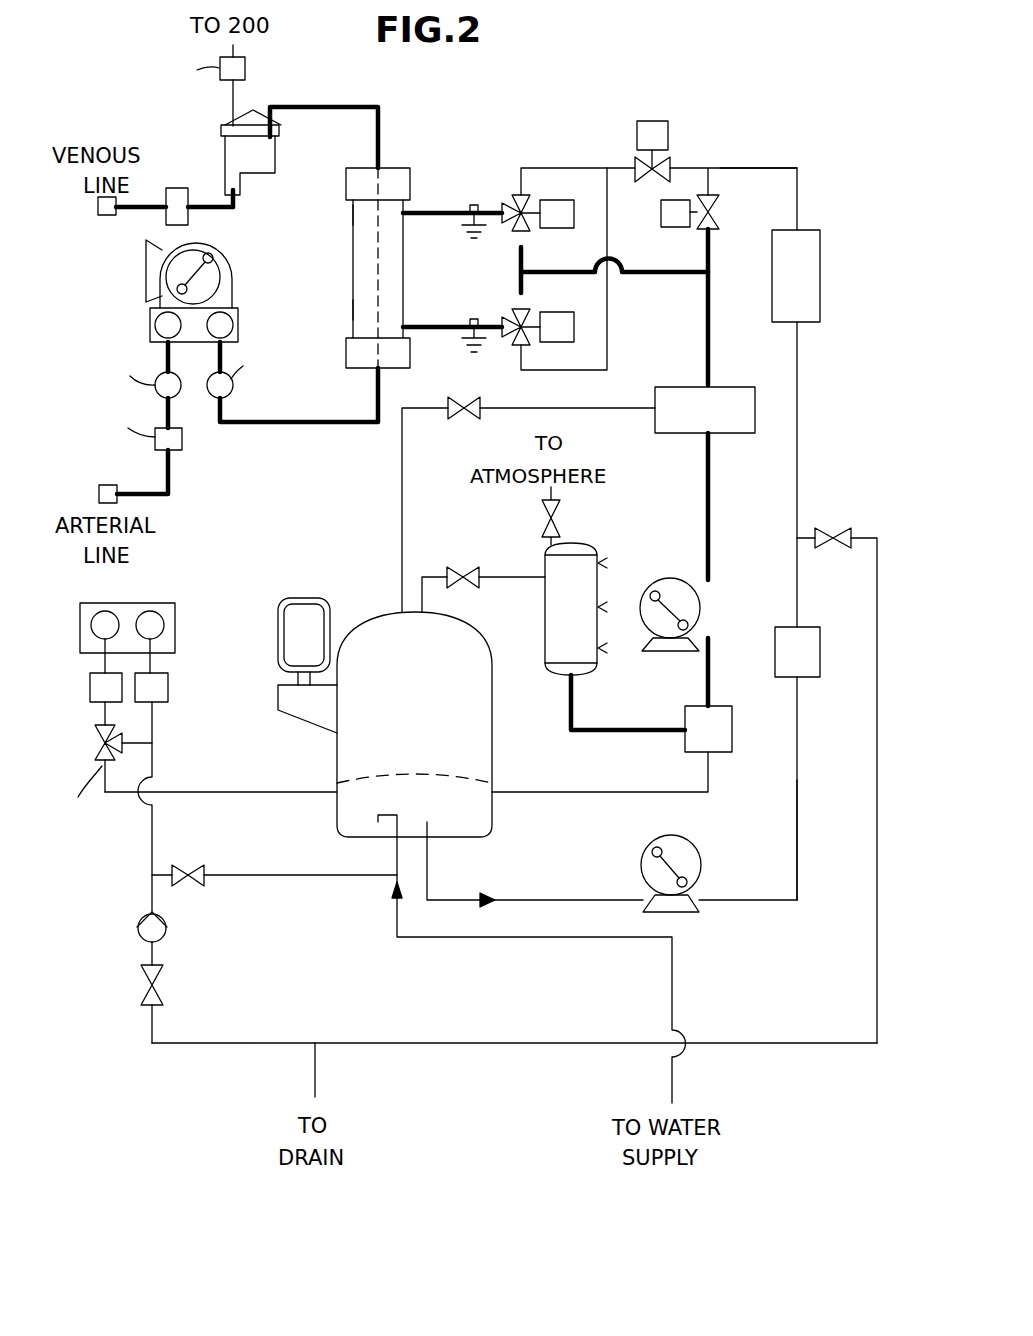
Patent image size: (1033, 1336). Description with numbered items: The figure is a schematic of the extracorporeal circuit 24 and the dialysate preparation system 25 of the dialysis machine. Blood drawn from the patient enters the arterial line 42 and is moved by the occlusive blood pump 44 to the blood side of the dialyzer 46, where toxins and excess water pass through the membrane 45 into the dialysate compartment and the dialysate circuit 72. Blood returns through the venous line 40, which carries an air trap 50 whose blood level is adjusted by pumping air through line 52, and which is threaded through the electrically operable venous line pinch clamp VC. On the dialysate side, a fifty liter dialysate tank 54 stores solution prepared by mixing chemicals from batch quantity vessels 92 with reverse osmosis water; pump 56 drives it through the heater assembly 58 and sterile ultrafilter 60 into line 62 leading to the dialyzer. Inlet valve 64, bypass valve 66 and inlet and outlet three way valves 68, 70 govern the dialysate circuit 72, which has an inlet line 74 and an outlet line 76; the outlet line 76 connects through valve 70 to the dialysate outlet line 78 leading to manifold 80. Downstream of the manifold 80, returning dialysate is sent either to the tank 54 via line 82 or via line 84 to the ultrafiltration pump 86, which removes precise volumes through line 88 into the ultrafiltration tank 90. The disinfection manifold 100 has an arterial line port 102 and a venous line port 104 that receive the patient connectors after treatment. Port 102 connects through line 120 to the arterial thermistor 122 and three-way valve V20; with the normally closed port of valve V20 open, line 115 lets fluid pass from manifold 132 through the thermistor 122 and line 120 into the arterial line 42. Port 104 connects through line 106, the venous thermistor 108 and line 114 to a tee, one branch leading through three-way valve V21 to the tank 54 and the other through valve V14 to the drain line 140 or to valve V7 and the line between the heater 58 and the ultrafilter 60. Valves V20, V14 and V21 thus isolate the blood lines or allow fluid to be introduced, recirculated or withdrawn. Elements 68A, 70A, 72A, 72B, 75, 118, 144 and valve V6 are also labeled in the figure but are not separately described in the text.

The extracorporeal circuit 24 is at (358, 92).
The dialysate preparation system 25 is at (354, 522).
The venous line 40 is at (384, 131).
The arterial line 42 is at (146, 490).
The occlusive blood pump 44 is at (225, 280).
The membrane 45 is at (353, 212).
The dialyzer 46 is at (353, 302).
The air trap 50 is at (275, 165).
The line 52 is at (232, 103).
The dialysate tank 54 is at (492, 743).
The pump 56 is at (697, 845).
The heater assembly 58 is at (822, 650).
The sterile ultrafilter 60 is at (820, 292).
The line 62 is at (752, 168).
The inlet valve 64 is at (665, 160).
The bypass valve 66 is at (718, 197).
The first inlet three way valve 68 is at (513, 188).
The valve actuator 68A is at (512, 205).
The second outlet three way valve 70 is at (508, 344).
The valve actuator 70A is at (521, 342).
The dialysate circuit 72 is at (683, 290).
The sensor 72A is at (464, 346).
The sensor 72B is at (464, 233).
The inlet line 74 is at (460, 212).
The bypass line 75 is at (519, 268).
The outlet line 76 is at (452, 322).
The dialysate outlet line 78 is at (678, 268).
The manifold 80 is at (750, 377).
The line 82 is at (612, 408).
The line 84 is at (712, 468).
The ultrafiltration pump 86 is at (700, 600).
The line 88 is at (614, 732).
The ultrafiltration tank 90 is at (578, 547).
The batch quantity vessels 92 is at (278, 632).
The disinfection manifold 100 is at (235, 600).
The arterial line port 102 is at (108, 603).
The venous line port 104 is at (165, 625).
The line 106 is at (150, 660).
The venous thermistor 108 is at (168, 688).
The line 114 is at (152, 727).
The line 115 is at (688, 790).
The heater line 118 is at (800, 772).
The line 120 is at (100, 663).
The thermistor 122 is at (92, 693).
The manifold 132 is at (733, 728).
The drain line 140 is at (318, 1077).
The tank outlet line 144 is at (397, 912).
The valve V6 is at (470, 557).
The valve V7 is at (830, 530).
The valve V14 is at (143, 988).
The three-way valve V20 is at (96, 748).
The three-way valve V21 is at (190, 886).
The venous line pinch clamp VC is at (190, 186).